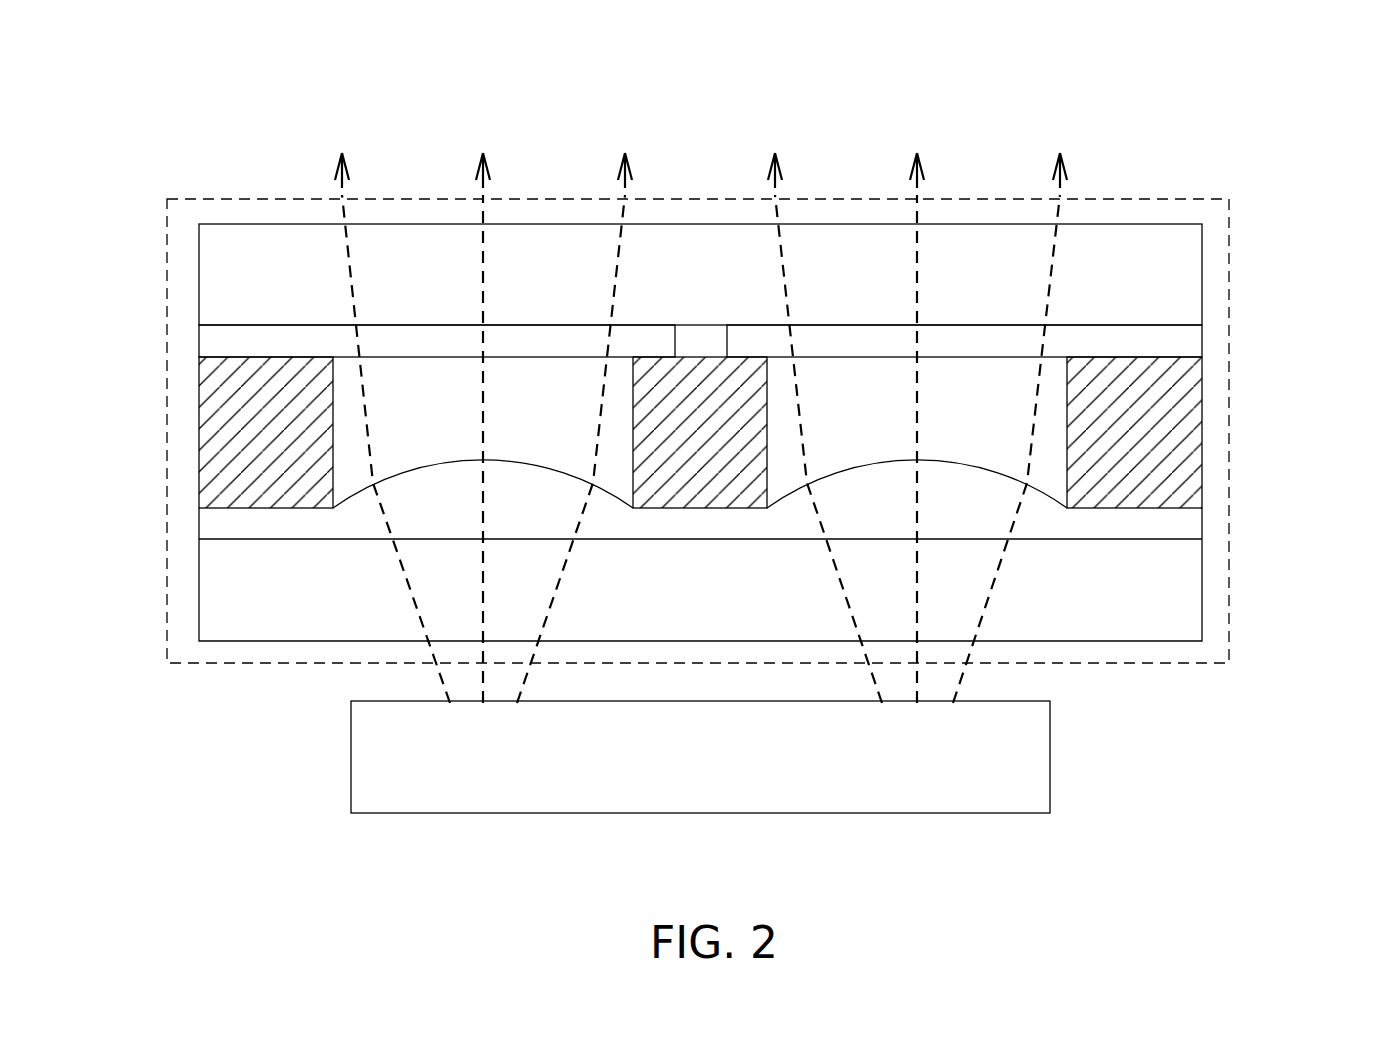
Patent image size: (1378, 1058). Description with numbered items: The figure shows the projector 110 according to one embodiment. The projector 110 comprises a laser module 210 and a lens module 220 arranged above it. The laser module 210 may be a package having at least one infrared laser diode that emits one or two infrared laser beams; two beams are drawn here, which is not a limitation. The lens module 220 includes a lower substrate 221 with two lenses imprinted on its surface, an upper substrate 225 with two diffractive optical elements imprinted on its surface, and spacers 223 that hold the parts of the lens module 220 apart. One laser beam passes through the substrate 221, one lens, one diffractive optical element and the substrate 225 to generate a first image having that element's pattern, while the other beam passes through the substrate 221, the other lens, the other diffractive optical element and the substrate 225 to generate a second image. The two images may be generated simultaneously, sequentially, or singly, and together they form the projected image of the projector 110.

The projector 110 is at (1186, 138).
The laser module 210 is at (1050, 758).
The lens module 220 is at (231, 199).
The substrate 221 is at (1180, 616).
The spacers 223 is at (240, 433).
The substrate 225 is at (1180, 263).